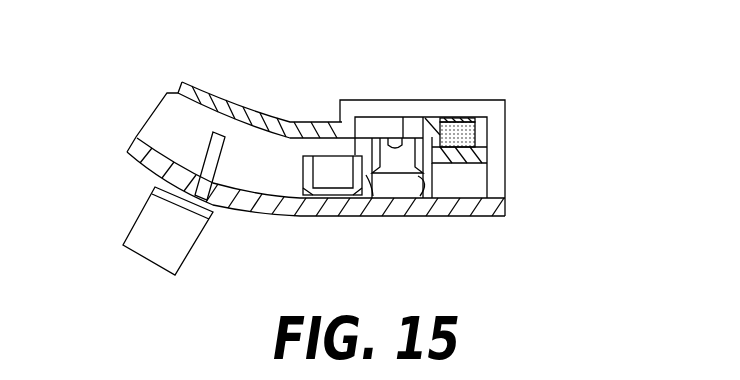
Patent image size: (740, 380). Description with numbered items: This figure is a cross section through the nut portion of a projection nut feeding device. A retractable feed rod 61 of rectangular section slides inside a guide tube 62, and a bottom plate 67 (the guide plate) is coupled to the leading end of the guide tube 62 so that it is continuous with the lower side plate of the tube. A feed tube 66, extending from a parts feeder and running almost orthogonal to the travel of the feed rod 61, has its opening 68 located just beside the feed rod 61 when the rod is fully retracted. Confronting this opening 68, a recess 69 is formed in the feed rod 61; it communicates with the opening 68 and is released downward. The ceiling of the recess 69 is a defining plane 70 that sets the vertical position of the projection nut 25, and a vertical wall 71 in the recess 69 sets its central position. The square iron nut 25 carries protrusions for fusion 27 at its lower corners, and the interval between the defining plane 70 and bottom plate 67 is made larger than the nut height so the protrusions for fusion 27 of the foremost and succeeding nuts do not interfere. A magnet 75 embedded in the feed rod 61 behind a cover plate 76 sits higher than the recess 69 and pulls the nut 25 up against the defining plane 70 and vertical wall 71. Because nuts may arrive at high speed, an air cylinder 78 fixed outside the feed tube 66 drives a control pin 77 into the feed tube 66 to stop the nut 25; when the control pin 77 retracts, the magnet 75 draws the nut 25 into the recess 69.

The projection nut 25 is at (303, 157).
The protrusions for fusion 27 is at (303, 193).
The feed rod 61 is at (477, 180).
The guide tube 62 is at (505, 162).
The feed tube 66 is at (140, 165).
The bottom plate 67 is at (268, 218).
The opening 68 is at (338, 148).
The recess 69 is at (368, 127).
The defining plane 70 is at (395, 146).
The vertical wall 71 is at (427, 191).
The magnet 75 is at (485, 137).
The cover plate 76 is at (460, 120).
The control pin 77 is at (213, 134).
The air cylinder 78 is at (194, 243).